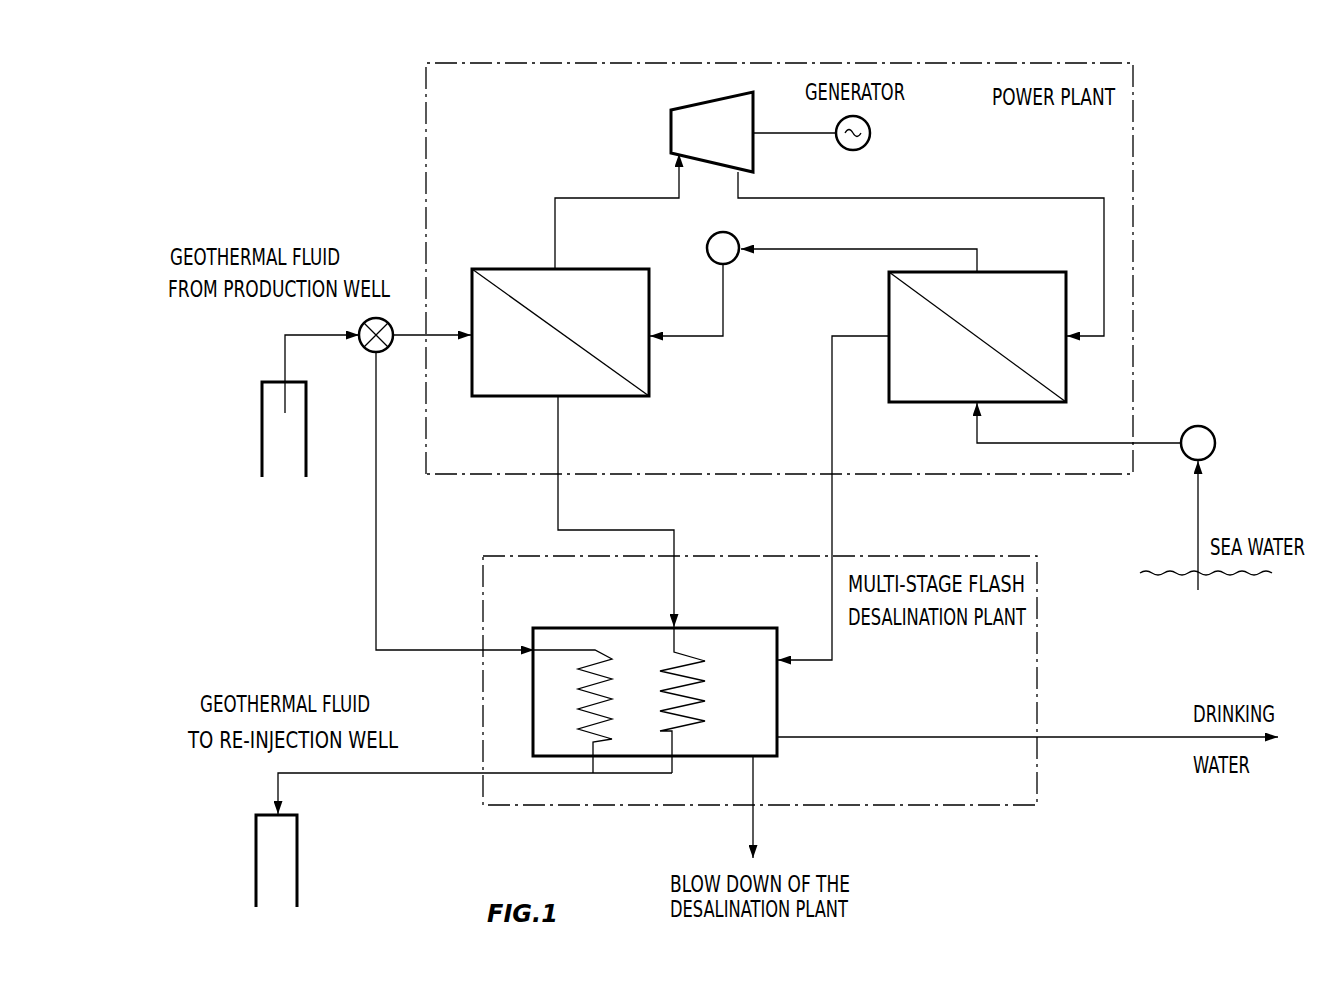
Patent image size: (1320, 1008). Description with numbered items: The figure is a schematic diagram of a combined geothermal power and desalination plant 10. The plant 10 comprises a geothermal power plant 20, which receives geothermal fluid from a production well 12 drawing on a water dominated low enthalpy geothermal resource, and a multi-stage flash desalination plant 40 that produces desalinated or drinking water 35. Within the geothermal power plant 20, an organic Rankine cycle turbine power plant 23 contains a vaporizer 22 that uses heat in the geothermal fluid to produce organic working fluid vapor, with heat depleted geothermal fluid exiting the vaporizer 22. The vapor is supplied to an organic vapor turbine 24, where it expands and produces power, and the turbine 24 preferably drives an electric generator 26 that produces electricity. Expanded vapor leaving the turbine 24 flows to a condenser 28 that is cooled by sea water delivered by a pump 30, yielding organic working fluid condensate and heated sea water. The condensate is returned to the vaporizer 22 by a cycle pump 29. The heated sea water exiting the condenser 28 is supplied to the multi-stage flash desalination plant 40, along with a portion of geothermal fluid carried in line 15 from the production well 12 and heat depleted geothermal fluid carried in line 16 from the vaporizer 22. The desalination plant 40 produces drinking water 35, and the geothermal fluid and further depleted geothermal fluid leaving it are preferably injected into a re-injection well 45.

The combined geothermal power and desalination plant 10 is at (272, 95).
The production well 12 is at (296, 383).
The line 15 is at (375, 545).
The line 16 is at (558, 486).
The geothermal power plant 20 is at (425, 93).
The vaporizer 22 is at (592, 268).
The organic Rankine cycle turbine power plant 23 is at (725, 415).
The organic vapor turbine 24 is at (673, 103).
The electric generator 26 is at (857, 150).
The condenser 28 is at (889, 278).
The cycle pump 29 is at (738, 240).
The pump 30 is at (1185, 455).
The drinking water 35 is at (1112, 736).
The multi-stage flash desalination plant 40 is at (1037, 612).
The re-injection well 45 is at (297, 812).